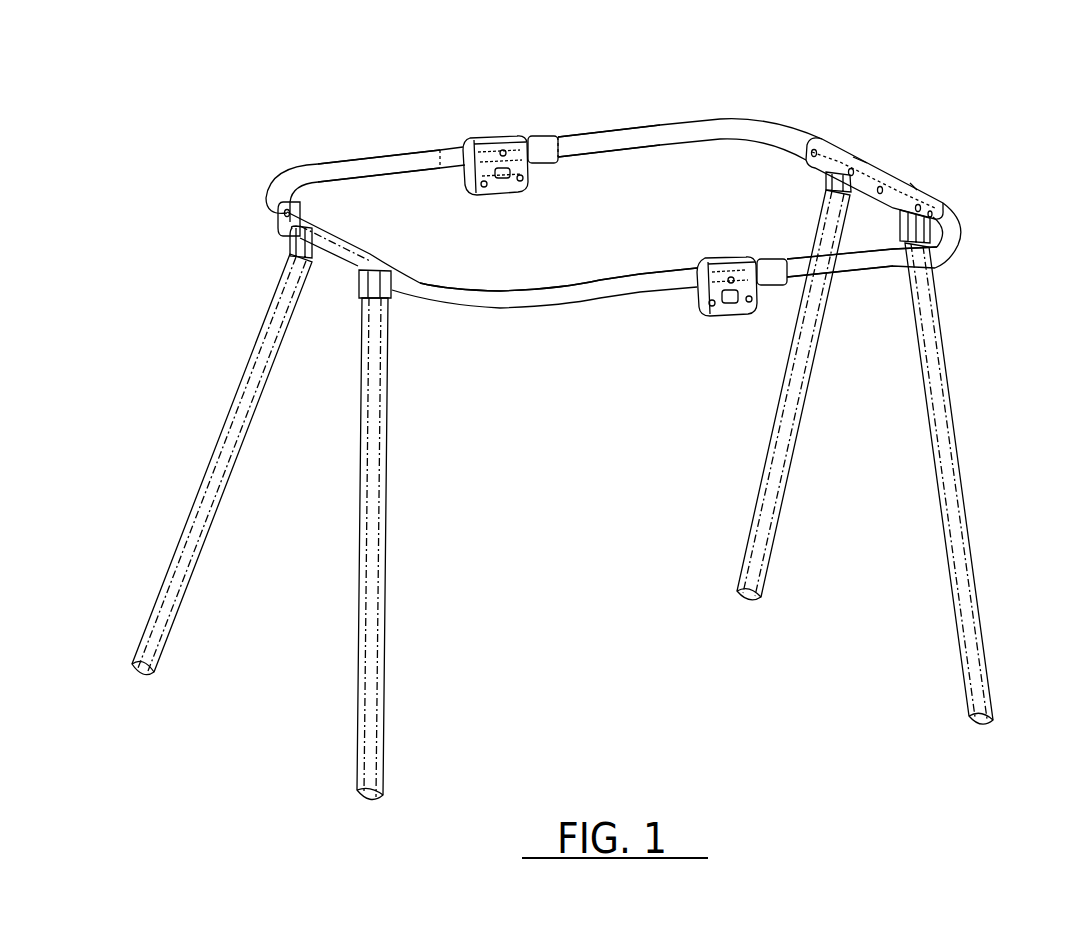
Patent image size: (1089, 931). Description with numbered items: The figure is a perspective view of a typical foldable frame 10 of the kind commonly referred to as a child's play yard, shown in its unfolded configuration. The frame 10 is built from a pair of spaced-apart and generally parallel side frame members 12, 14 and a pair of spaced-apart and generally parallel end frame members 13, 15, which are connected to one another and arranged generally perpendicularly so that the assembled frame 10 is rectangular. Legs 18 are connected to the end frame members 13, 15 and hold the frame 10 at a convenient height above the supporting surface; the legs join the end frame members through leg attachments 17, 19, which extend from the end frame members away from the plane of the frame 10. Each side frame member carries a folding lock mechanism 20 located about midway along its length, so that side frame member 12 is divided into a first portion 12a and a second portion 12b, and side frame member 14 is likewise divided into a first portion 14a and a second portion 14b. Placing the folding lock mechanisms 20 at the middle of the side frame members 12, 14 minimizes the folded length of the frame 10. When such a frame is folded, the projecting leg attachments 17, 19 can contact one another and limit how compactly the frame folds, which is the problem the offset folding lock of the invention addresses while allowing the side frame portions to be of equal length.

The foldable frame 10 is at (948, 127).
The side frame member 12 is at (562, 112).
The first portion 12a is at (376, 158).
The second portion 12b is at (659, 132).
The end frame member 13 is at (384, 239).
The side frame member 14 is at (653, 314).
The first portion 14a is at (581, 290).
The second portion 14b is at (887, 268).
The end frame member 15 is at (921, 177).
The leg attachment 17 is at (290, 245).
The leg 18 is at (392, 500).
The leg attachment 19 is at (818, 185).
The folding lock mechanism 20 is at (498, 115).